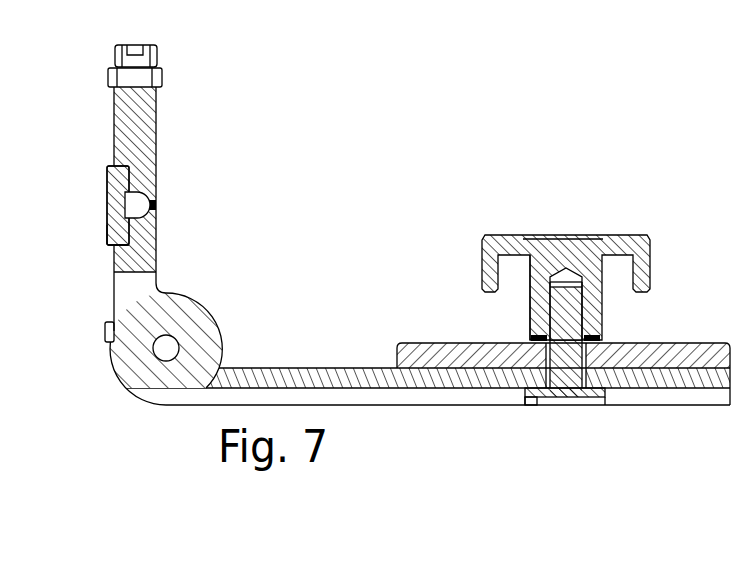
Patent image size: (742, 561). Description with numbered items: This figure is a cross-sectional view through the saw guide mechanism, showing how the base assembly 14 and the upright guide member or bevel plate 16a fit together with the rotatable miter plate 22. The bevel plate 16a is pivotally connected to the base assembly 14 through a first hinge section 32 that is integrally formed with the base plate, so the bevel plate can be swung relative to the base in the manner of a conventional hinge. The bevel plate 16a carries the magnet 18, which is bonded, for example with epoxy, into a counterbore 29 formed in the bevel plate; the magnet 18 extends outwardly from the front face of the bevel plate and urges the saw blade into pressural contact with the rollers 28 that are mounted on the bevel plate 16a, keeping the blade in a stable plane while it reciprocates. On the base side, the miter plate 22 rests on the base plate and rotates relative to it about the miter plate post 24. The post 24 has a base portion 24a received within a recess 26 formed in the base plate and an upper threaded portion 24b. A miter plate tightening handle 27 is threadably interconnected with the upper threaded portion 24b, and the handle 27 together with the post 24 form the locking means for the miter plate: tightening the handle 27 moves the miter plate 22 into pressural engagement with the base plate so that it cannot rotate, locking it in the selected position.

The base assembly 14 is at (284, 366).
The guide member or bevel plate 16a is at (157, 137).
The magnet 18 is at (107, 183).
The miter plate 22 is at (695, 343).
The miter plate post 24 is at (572, 396).
The base portion 24a is at (538, 396).
The upper threaded portion 24b is at (537, 315).
The recess 26 is at (531, 398).
The miter plate tightening handle 27 is at (482, 246).
The rollers 28 is at (162, 77).
The counterbore 29 is at (108, 229).
The first hinge section 32 is at (197, 315).